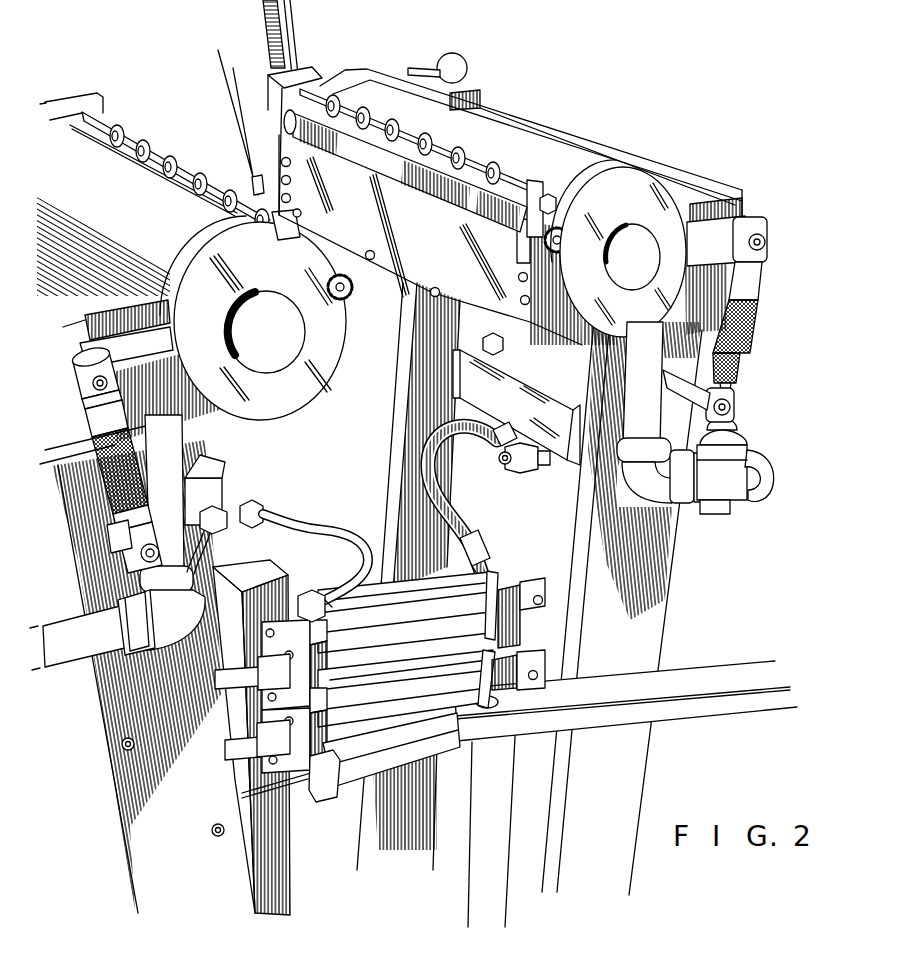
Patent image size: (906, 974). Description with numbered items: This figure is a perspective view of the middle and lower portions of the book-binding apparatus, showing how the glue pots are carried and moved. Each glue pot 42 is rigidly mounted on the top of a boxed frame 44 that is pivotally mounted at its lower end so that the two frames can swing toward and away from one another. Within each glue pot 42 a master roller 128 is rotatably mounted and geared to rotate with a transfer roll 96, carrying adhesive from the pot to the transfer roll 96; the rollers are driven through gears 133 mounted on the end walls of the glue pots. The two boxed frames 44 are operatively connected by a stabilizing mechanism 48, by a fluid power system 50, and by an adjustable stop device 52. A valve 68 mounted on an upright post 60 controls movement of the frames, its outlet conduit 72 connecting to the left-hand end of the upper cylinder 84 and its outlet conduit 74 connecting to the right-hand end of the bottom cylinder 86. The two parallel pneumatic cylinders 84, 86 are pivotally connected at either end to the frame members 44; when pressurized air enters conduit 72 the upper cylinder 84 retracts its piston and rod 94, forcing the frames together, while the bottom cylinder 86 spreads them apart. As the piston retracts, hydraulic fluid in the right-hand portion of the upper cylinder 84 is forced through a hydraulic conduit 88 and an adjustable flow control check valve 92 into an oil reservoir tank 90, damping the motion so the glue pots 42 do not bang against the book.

The gears 133 is at (267, 107).
The master roller 128 is at (540, 147).
The transfer roll 96 is at (470, 204).
The glue pots 42 is at (335, 377).
The oil reservoir tank 90 is at (557, 388).
The hydraulic conduit 88 is at (430, 479).
The flow control check valve 92 is at (540, 471).
The outlet conduit 74 is at (323, 530).
The valve 68 is at (265, 546).
The outlet conduit 72 is at (213, 553).
The stabilizing mechanism 48 is at (311, 574).
The fluid power system 50 is at (522, 557).
The upper cylinder 84 is at (493, 579).
The bottom cylinder 86 is at (520, 653).
The boxed frame 44 is at (127, 802).
The piston and rod 94 is at (233, 680).
The adjustable stop device 52 is at (338, 782).
The upright post 60 is at (273, 888).